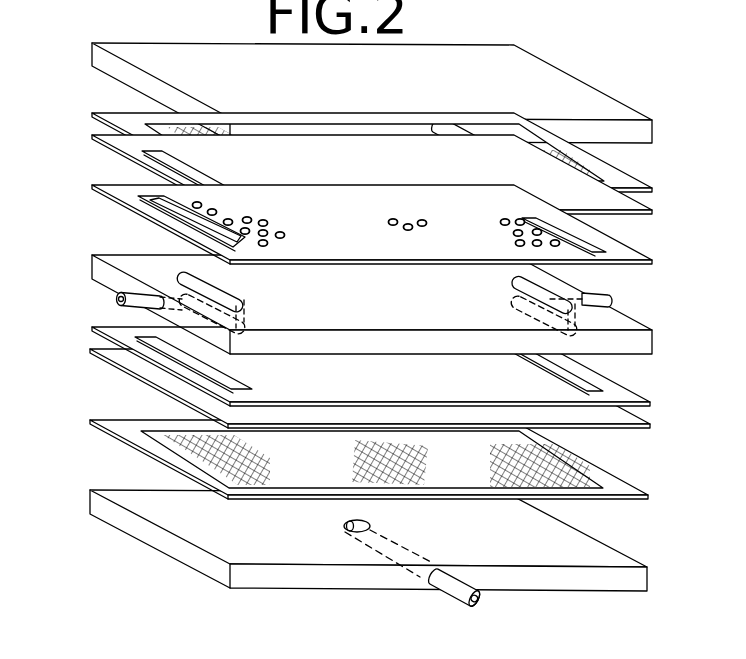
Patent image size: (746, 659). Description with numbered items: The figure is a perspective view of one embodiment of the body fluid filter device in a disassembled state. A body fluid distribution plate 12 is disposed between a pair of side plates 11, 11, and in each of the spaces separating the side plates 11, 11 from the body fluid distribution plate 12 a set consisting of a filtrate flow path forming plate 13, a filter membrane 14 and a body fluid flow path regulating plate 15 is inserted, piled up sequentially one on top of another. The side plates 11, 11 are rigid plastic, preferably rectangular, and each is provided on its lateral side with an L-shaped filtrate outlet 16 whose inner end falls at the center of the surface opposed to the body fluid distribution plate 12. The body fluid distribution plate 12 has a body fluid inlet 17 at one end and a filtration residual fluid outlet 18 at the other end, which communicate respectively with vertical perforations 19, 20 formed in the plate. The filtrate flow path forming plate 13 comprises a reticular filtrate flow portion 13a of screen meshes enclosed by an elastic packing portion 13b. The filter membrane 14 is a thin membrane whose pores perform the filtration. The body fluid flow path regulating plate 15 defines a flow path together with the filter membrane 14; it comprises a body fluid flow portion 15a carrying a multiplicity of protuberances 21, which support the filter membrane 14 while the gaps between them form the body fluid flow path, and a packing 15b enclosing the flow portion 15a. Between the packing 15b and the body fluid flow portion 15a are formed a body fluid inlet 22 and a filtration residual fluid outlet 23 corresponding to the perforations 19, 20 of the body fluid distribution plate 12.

The side plate 11 is at (277, 577).
The body fluid distribution plate 12 is at (97, 268).
The filtrate flow path forming plate 13 is at (103, 437).
The filtrate flow portion 13a is at (170, 125).
The packing portion 13b is at (610, 173).
The filter membrane 14 is at (117, 370).
The body fluid flow path regulating plate 15 is at (83, 323).
The body fluid flow portion 15a is at (371, 233).
The packing 15b is at (172, 218).
The filtrate outlet 16 is at (453, 587).
The body fluid inlet 17 is at (118, 298).
The filtration residual fluid outlet 18 is at (615, 302).
The vertical perforation 19 is at (238, 281).
The vertical perforation 20 is at (513, 281).
The protuberances 21 is at (283, 238).
The body fluid inlet 22 is at (157, 200).
The filtration residual fluid outlet 23 is at (600, 242).